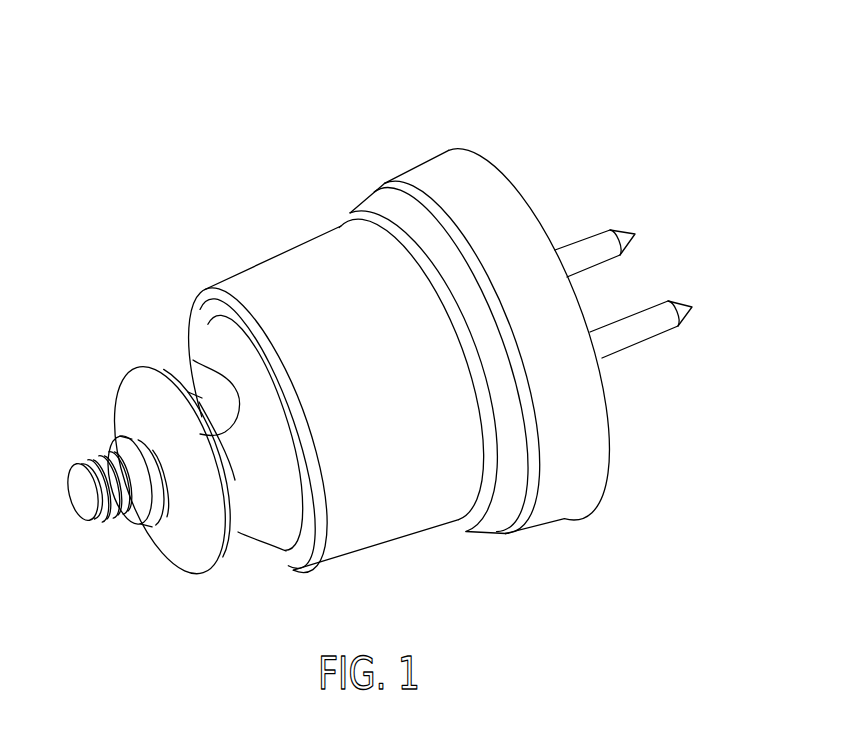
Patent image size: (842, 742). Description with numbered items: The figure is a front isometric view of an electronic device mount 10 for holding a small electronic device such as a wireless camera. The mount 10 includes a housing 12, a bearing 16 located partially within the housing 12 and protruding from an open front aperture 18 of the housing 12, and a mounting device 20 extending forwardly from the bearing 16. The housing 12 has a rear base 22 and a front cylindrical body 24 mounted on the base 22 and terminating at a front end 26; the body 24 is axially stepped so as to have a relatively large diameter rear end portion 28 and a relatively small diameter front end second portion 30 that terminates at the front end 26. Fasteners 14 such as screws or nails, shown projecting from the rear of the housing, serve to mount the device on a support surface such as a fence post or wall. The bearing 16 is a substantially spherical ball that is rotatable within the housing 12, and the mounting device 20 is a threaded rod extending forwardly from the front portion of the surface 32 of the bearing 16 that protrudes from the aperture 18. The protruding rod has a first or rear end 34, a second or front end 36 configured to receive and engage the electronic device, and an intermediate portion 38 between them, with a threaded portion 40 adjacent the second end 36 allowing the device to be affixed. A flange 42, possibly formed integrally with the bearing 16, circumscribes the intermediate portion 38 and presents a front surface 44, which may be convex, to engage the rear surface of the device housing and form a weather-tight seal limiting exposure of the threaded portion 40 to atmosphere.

The mount 10 is at (398, 92).
The housing 12 is at (437, 537).
The fasteners 14 is at (580, 237).
The bearing 16 is at (260, 510).
The front aperture 18 is at (171, 385).
The mounting device 20 is at (103, 435).
The rear base 22 is at (613, 474).
The front cylindrical body 24 is at (403, 528).
The front end 26 is at (293, 557).
The rear end portion 28 is at (436, 168).
The front end second portion 30 is at (286, 264).
The surface 32 is at (236, 441).
The first end 34 is at (232, 338).
The second end 36 is at (83, 500).
The intermediate portion 38 is at (138, 498).
The threaded portion 40 is at (87, 462).
The flange 42 is at (226, 545).
The front surface 44 is at (192, 538).